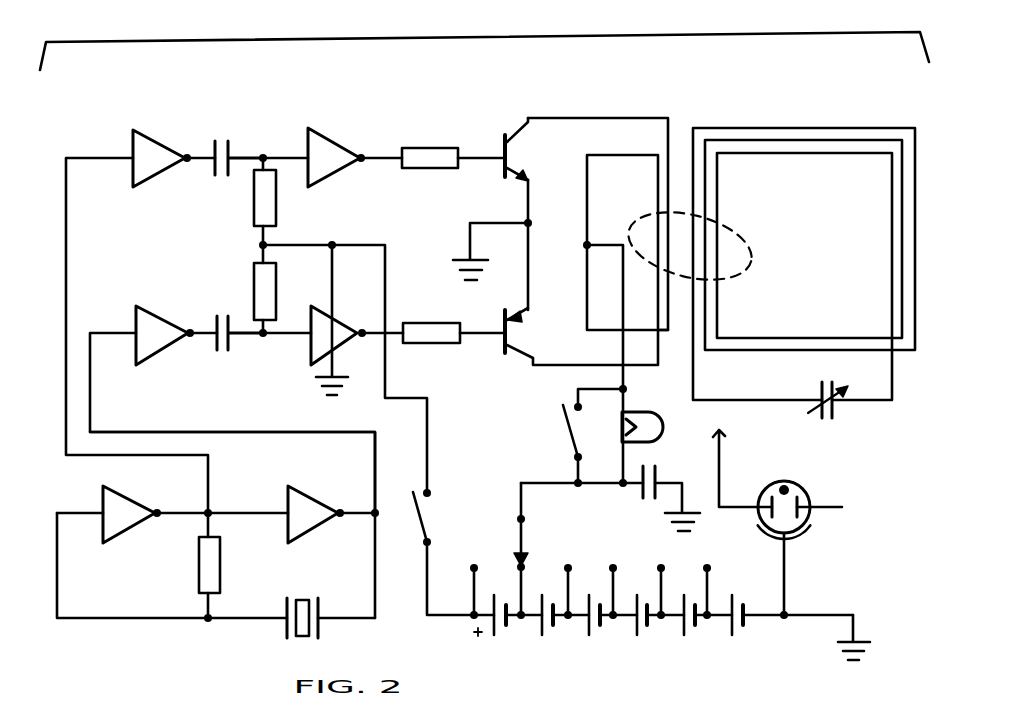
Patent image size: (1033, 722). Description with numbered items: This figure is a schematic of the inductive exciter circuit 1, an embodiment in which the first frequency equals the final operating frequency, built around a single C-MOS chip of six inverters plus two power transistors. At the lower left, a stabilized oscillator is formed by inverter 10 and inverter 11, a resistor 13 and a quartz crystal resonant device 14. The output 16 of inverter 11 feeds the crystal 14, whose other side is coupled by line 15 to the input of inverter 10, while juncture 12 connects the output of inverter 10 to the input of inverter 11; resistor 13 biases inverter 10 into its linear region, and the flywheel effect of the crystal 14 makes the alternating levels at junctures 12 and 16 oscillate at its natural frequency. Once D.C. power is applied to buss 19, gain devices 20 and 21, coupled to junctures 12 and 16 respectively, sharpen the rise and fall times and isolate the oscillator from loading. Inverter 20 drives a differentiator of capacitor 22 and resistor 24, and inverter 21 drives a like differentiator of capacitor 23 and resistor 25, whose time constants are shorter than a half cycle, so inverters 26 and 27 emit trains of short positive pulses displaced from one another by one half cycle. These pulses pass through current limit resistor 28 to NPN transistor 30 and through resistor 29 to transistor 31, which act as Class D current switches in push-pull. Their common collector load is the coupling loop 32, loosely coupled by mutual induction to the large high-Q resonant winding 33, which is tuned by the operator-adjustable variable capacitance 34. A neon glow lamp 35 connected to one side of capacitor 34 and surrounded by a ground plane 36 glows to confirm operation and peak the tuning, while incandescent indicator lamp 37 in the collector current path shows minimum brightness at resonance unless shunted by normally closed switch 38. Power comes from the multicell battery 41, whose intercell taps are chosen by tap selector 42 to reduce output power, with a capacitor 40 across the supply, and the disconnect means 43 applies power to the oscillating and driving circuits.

The inductive exciter circuit 1 is at (623, 31).
The inverter 10 is at (138, 501).
The inverter 11 is at (322, 500).
The juncture 12 is at (213, 480).
The resistor 13 is at (224, 572).
The mechanical resonant device 14 is at (327, 606).
The line 15 is at (203, 627).
The output 16 is at (311, 426).
The buss 19 is at (388, 247).
The gain device 20 is at (157, 139).
The gain device 21 is at (165, 320).
The capacitor 22 is at (232, 148).
The capacitor 23 is at (237, 345).
The resistor 24 is at (249, 208).
The resistor 25 is at (250, 284).
The inverter 26 is at (335, 137).
The inverter 27 is at (349, 324).
The current limit resistor 28 is at (432, 142).
The resistor 29 is at (451, 317).
The transistor 30 is at (496, 137).
The transistor 31 is at (514, 360).
The coupling loop 32 is at (578, 186).
The resonant winding 33 is at (790, 120).
The variable capacitance 34 is at (807, 391).
The neon glow lamp 35 is at (758, 483).
The ground plane 36 is at (801, 543).
The illumination device 37 is at (664, 418).
The switch 38 is at (560, 437).
The capacitor 40 is at (660, 472).
The multicell battery 41 is at (618, 643).
The tap selector 42 is at (533, 528).
The disconnect means 43 is at (440, 522).